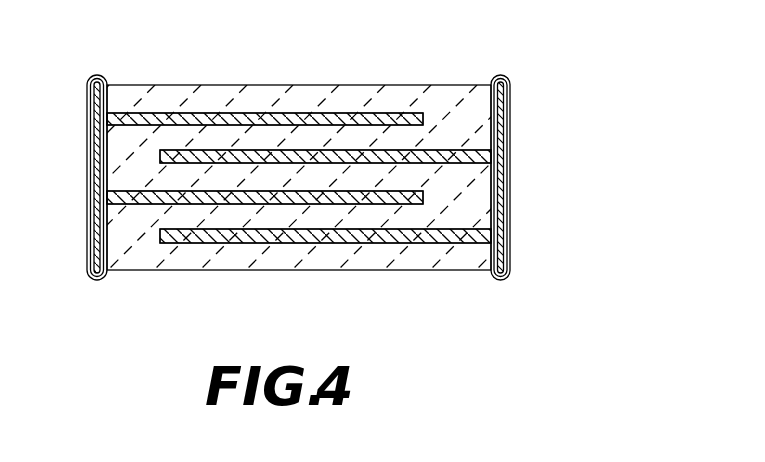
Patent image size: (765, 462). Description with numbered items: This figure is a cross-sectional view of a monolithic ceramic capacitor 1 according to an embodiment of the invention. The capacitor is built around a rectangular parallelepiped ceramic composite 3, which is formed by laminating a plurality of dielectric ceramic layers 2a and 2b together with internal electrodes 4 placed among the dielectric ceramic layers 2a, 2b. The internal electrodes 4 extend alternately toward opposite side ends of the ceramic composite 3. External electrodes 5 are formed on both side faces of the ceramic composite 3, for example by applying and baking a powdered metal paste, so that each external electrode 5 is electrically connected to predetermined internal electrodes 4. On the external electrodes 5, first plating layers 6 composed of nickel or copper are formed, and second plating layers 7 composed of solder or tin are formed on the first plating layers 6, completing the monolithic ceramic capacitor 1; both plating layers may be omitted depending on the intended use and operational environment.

The monolithic ceramic capacitor 1 is at (330, 166).
The dielectric ceramic layer 2a is at (316, 95).
The dielectric ceramic layer 2b is at (370, 128).
The ceramic composite 3 is at (235, 80).
The internal electrode 4 is at (135, 112).
The external electrode 5 is at (90, 101).
The first plating layer 6 is at (92, 172).
The second plating layer 7 is at (89, 238).